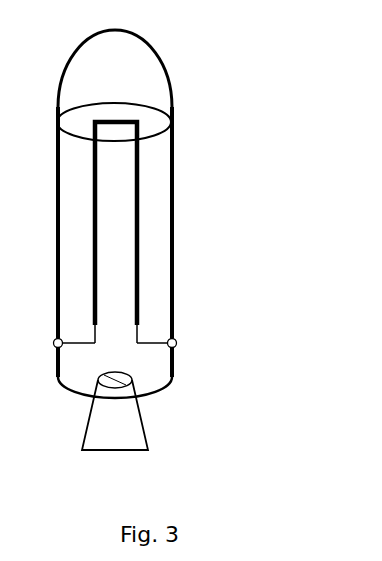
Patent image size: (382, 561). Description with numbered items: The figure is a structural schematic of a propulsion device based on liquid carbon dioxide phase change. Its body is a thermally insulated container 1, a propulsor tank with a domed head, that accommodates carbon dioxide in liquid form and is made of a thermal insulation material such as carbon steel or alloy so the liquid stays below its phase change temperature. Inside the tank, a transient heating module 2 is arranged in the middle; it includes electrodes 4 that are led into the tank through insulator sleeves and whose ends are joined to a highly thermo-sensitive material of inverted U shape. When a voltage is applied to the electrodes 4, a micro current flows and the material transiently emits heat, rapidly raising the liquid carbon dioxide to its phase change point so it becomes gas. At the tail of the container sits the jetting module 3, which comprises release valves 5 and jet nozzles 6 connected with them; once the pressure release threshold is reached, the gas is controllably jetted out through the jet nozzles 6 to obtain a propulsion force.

The thermally insulated container 1 is at (181, 208).
The transient heating module 2 is at (148, 288).
The jetting module 3 is at (240, 400).
The electrode 4 is at (42, 343).
The release valve 5 is at (143, 381).
The jet nozzle 6 is at (148, 422).